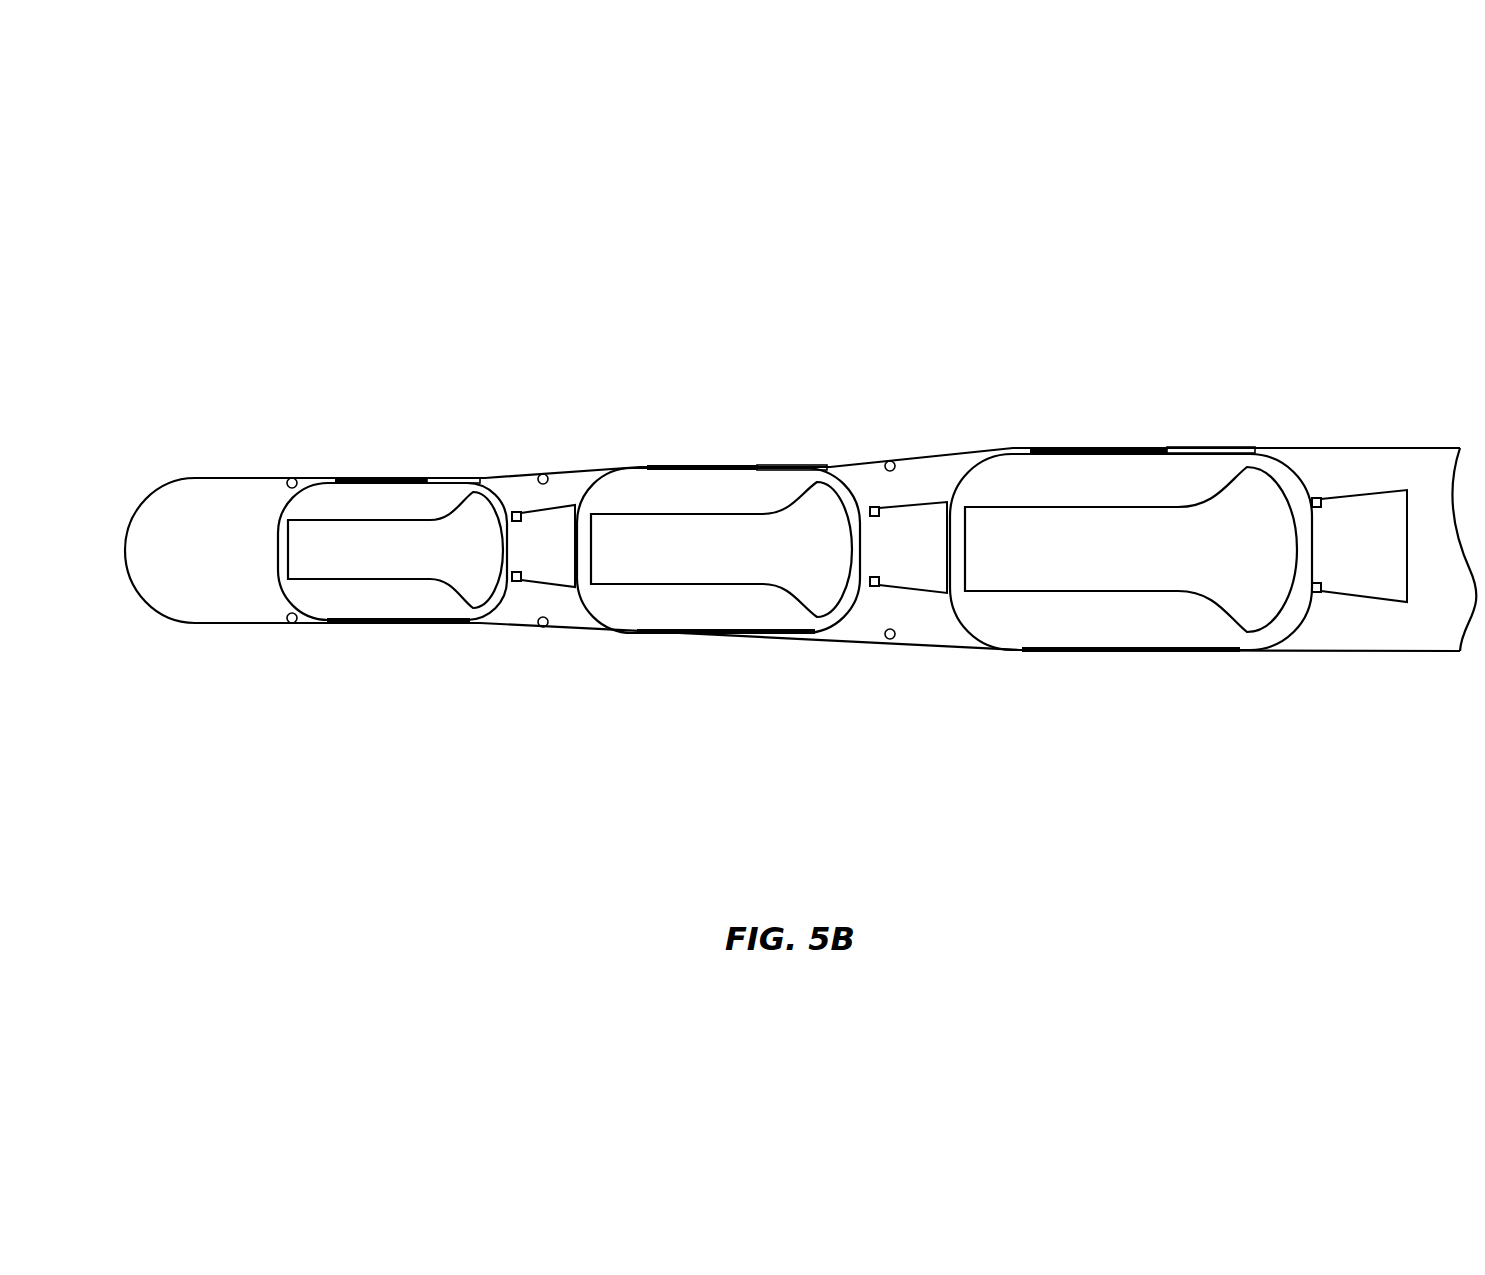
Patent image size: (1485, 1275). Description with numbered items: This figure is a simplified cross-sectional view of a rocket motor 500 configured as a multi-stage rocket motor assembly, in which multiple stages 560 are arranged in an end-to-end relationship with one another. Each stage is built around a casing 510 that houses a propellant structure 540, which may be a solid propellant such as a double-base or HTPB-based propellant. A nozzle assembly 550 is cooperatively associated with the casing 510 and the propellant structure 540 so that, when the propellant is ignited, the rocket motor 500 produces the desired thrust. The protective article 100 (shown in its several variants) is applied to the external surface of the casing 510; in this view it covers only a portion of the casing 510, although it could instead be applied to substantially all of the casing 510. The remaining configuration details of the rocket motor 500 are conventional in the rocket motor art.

The rocket motor 500 is at (152, 434).
The casing 510 is at (307, 622).
The propellant structure 540 is at (360, 497).
The protective article 100 is at (795, 561).
The stages 560 is at (500, 472).
The nozzle assembly 550 is at (527, 578).